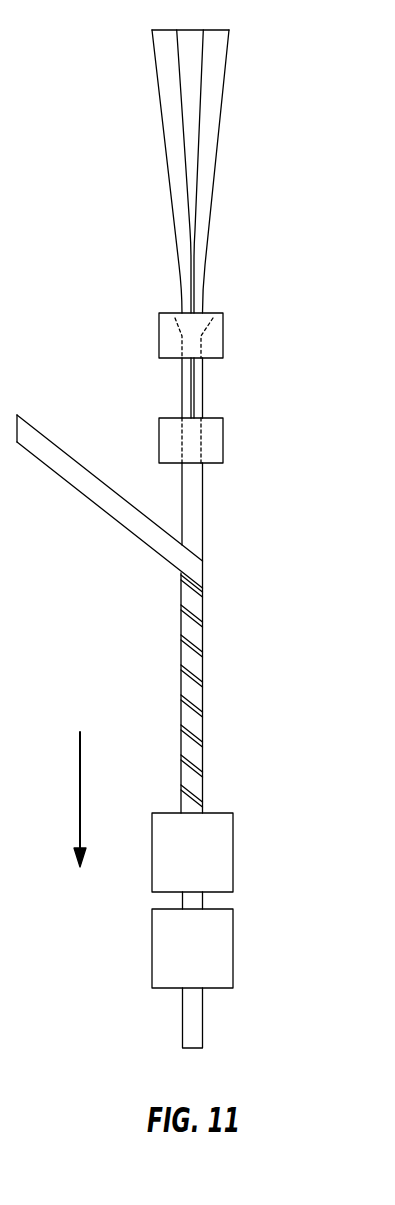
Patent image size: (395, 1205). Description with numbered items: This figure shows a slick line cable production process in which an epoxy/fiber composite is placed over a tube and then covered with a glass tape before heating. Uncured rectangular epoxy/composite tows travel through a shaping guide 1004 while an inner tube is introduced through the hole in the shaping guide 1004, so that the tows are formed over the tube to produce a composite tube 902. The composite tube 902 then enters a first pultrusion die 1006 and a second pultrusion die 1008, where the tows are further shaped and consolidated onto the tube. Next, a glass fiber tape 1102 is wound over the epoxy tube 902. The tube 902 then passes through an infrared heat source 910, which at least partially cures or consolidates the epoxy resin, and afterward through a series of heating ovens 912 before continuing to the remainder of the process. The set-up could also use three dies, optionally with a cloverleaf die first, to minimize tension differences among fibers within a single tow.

The shaping guide 1004 is at (153, 53).
The first pultrusion die 1006 is at (159, 335).
The composite tube 902 is at (202, 383).
The second pultrusion die 1008 is at (223, 437).
The glass fiber tape 1102 is at (182, 613).
The infrared heat source 910 is at (233, 852).
The heating ovens 912 is at (233, 945).